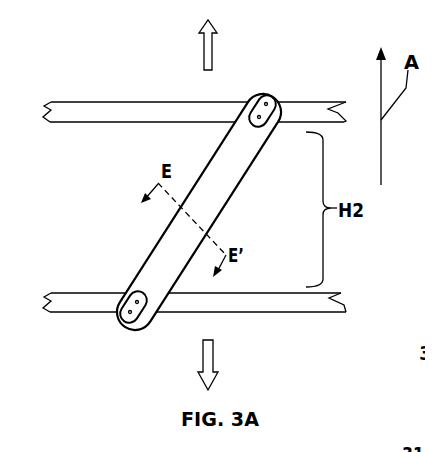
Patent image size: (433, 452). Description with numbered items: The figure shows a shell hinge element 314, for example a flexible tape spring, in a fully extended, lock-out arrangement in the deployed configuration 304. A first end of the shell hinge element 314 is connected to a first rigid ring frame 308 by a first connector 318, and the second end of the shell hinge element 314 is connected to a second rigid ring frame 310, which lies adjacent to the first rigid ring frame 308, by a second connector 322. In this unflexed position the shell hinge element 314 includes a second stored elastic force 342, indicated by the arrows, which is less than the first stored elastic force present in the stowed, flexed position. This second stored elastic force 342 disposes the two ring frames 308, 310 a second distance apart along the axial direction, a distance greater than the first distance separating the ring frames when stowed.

The deployed configuration 304 is at (151, 79).
The second rigid ring frame 310 is at (122, 117).
The first rigid ring frame 308 is at (80, 302).
The shell hinge element 314 is at (223, 205).
The second connector 322 is at (261, 98).
The first connector 318 is at (137, 306).
The second stored elastic force 342 is at (206, 50).